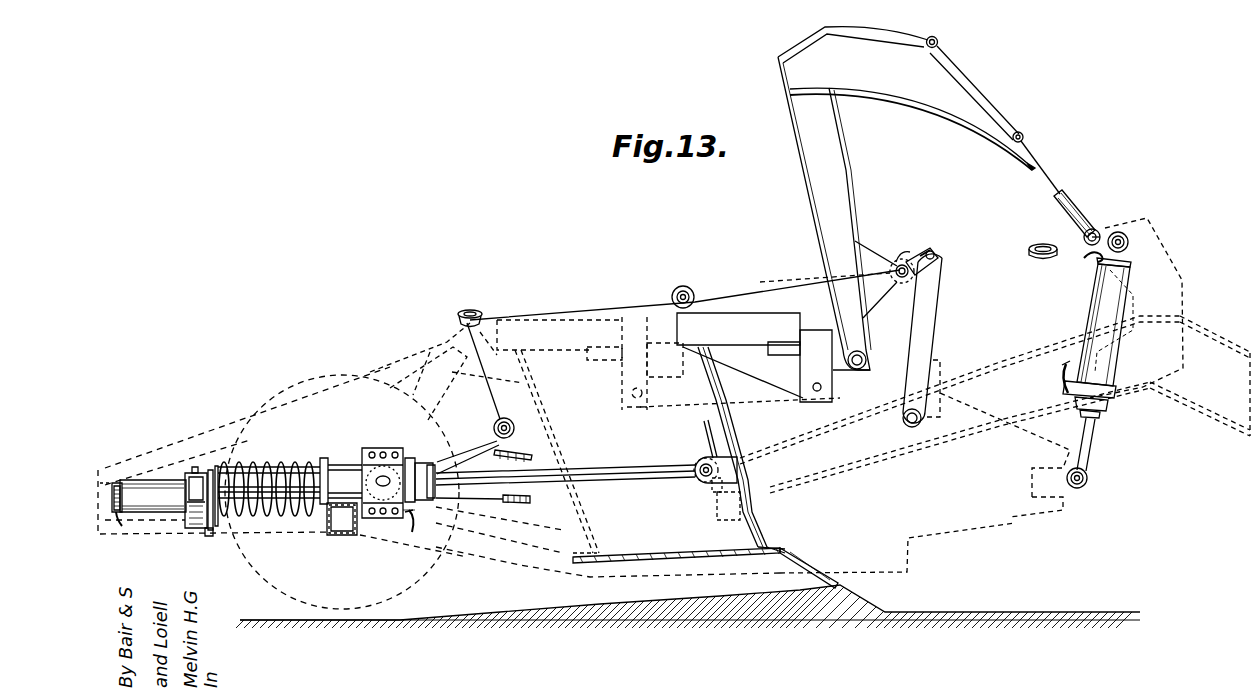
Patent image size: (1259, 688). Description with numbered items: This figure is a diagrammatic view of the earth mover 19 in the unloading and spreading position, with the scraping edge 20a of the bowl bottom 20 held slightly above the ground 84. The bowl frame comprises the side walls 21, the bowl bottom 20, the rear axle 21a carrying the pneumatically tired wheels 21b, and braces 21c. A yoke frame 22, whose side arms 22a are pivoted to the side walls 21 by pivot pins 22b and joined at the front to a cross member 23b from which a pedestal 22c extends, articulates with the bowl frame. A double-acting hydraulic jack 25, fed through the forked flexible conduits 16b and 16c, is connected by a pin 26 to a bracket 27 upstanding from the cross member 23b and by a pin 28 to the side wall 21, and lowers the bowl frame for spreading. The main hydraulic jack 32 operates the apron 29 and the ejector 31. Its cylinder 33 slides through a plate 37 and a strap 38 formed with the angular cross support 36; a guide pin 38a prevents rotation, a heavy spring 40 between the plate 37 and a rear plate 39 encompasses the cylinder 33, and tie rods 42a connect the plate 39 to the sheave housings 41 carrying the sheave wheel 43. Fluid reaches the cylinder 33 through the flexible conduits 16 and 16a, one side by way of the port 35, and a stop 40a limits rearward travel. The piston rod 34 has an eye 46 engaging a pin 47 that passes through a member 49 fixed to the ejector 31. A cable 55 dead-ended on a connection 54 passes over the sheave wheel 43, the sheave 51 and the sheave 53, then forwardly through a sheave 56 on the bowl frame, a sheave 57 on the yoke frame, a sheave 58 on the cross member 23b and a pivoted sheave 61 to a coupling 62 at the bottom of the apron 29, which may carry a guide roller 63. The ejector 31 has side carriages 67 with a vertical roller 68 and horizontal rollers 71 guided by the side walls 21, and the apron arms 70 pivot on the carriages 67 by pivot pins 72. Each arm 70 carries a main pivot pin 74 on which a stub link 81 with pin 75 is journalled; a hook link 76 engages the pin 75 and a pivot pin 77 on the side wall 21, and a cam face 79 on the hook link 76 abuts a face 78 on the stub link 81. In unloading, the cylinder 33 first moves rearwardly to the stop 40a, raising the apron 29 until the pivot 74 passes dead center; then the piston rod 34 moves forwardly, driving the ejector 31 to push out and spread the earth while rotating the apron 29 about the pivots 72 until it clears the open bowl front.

The flexible conduit 16 is at (118, 485).
The flexible conduit 16a is at (412, 535).
The forked flexible conduit 16b is at (1088, 260).
The forked flexible conduit 16c is at (1063, 380).
The earth mover 19 is at (657, 511).
The bowl bottom 20 is at (648, 556).
The scraping edge 20a is at (840, 580).
The side walls 21 is at (1022, 520).
The rear axle 21a is at (343, 536).
The ground-engaging wheels 21b is at (312, 380).
The braces 21c is at (420, 352).
The yoke frame 22 is at (1185, 412).
The side arms 22a is at (960, 430).
The pivot pins 22b is at (718, 494).
The pedestal 22c is at (1212, 412).
The cross member 23b is at (1201, 326).
The hydraulic jack 25 is at (1102, 292).
The pins 26 is at (1095, 230).
The brackets 27 is at (1124, 234).
The pins 28 is at (1090, 479).
The front apron 29 is at (928, 105).
The earth ejector 31 is at (732, 420).
The hydraulic jack 32 is at (343, 466).
The cylinder 33 is at (150, 480).
The piston rod 34 is at (620, 470).
The port 35 is at (417, 521).
The angular cross support 36 is at (209, 537).
The plate 37 is at (323, 462).
The strap 38 is at (188, 492).
The guide pin 38a is at (194, 467).
The plate 39 is at (210, 468).
The heavy spring 40 is at (270, 463).
The stop 40a is at (113, 481).
The sheave housings 41 is at (365, 449).
The tie rods 42a is at (283, 517).
The sheave wheel 43 is at (375, 518).
The eye 46 is at (701, 460).
The pin 47 is at (699, 469).
The member 49 is at (713, 455).
The upper horizontally disposed sheave 51 is at (520, 452).
The second vertical sheave 53 is at (493, 430).
The dead end connection 54 is at (517, 503).
The cable 55 is at (1030, 162).
The sheave 56 is at (476, 312).
The sheave 57 is at (690, 288).
The sheave 58 is at (1043, 244).
The sheave 61 is at (1062, 196).
The coupling 62 is at (1025, 137).
The guide roller 63 is at (940, 43).
The side carriages 67 is at (740, 314).
The vertical roller 68 is at (645, 410).
The arms 70 is at (812, 214).
The horizontal rollers 71 is at (600, 362).
The pivot pins 72 is at (856, 369).
The main pivot pin 74 is at (902, 264).
The pivot pin 75 is at (940, 255).
The hook link 76 is at (935, 327).
The pivot pin 77 is at (906, 426).
The face 78 is at (903, 258).
The cam face 79 is at (918, 252).
The stub link 81 is at (934, 250).
The ground 84 is at (940, 612).